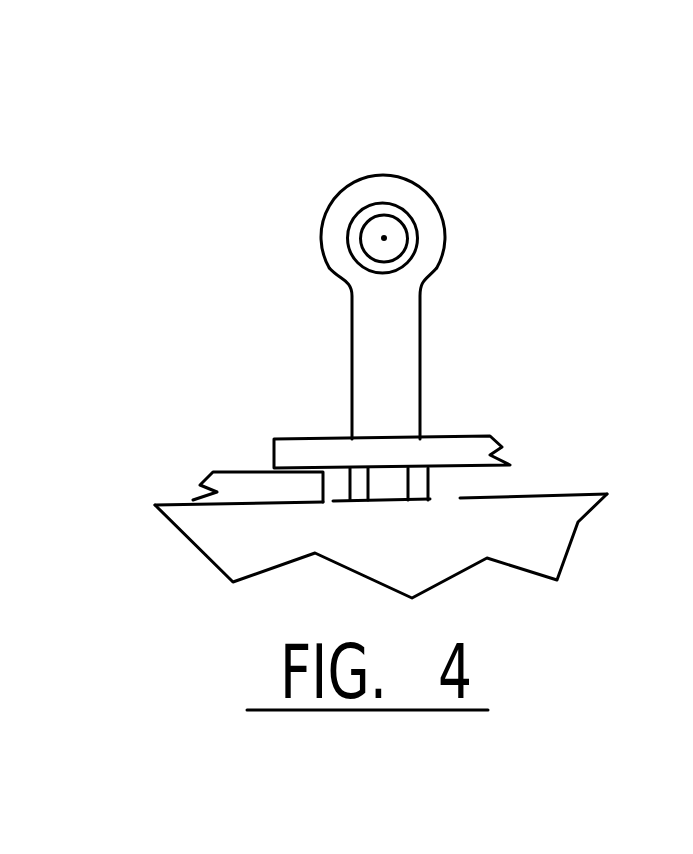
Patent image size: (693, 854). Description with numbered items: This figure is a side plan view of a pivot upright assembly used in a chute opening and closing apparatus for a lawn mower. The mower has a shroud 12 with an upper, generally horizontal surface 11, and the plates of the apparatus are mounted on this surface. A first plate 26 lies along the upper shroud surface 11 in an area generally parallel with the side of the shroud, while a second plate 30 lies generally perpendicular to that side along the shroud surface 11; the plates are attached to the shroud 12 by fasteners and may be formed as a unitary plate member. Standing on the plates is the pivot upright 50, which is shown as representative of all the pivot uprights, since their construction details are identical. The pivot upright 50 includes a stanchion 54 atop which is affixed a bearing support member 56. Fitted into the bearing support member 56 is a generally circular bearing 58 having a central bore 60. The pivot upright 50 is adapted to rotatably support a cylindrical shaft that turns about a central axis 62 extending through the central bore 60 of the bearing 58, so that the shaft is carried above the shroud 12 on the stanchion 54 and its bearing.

The upper shroud surface 11 is at (518, 493).
The shroud 12 is at (545, 512).
The first plate 26 is at (230, 472).
The second plate 30 is at (314, 438).
The pivot upright 50 is at (285, 245).
The stanchion 54 is at (400, 368).
The bearing support member 56 is at (387, 183).
The bearing 58 is at (362, 220).
The central bore 60 is at (384, 226).
The central axis 62 is at (386, 238).